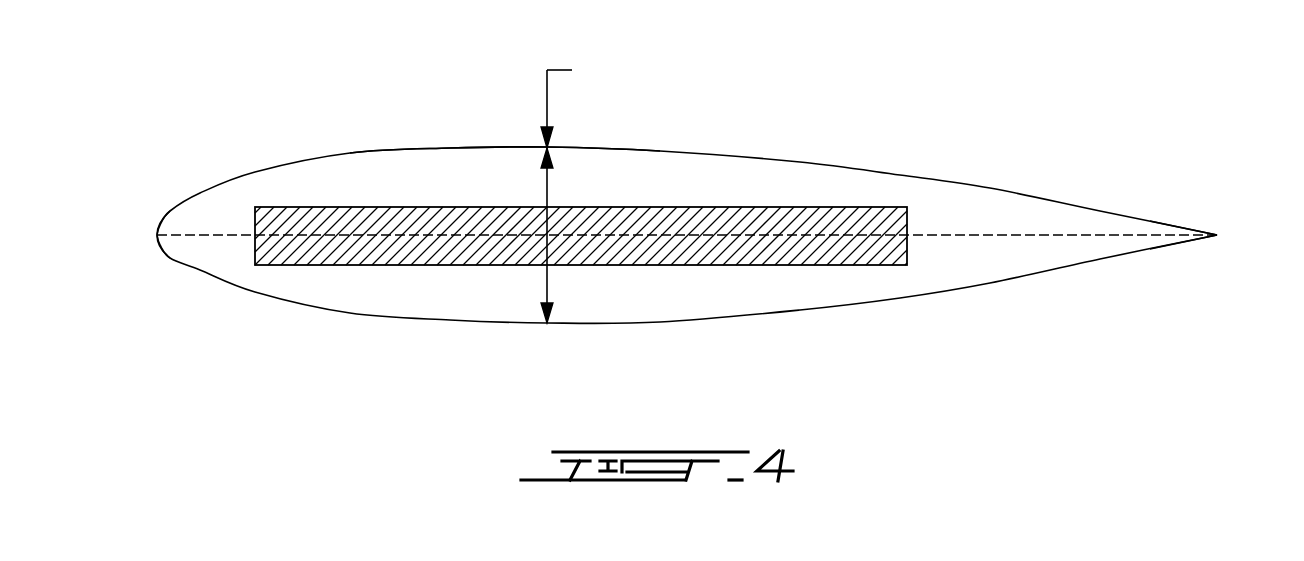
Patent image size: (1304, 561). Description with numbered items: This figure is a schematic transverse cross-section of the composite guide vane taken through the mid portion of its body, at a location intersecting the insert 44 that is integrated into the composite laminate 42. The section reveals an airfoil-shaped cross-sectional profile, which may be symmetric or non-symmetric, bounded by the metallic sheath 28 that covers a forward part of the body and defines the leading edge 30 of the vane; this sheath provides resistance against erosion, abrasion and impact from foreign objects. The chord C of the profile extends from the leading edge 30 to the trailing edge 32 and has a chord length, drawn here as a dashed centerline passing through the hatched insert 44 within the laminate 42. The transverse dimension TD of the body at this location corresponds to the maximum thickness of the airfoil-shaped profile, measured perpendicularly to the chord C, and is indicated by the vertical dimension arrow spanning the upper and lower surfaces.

The metallic sheath 28 is at (236, 178).
The leading edge 30 is at (157, 235).
The trailing edge 32 is at (1217, 235).
The laminate 42 is at (477, 180).
The insert 44 is at (400, 217).
The chord C is at (1025, 233).
The transverse dimension TD is at (578, 188).